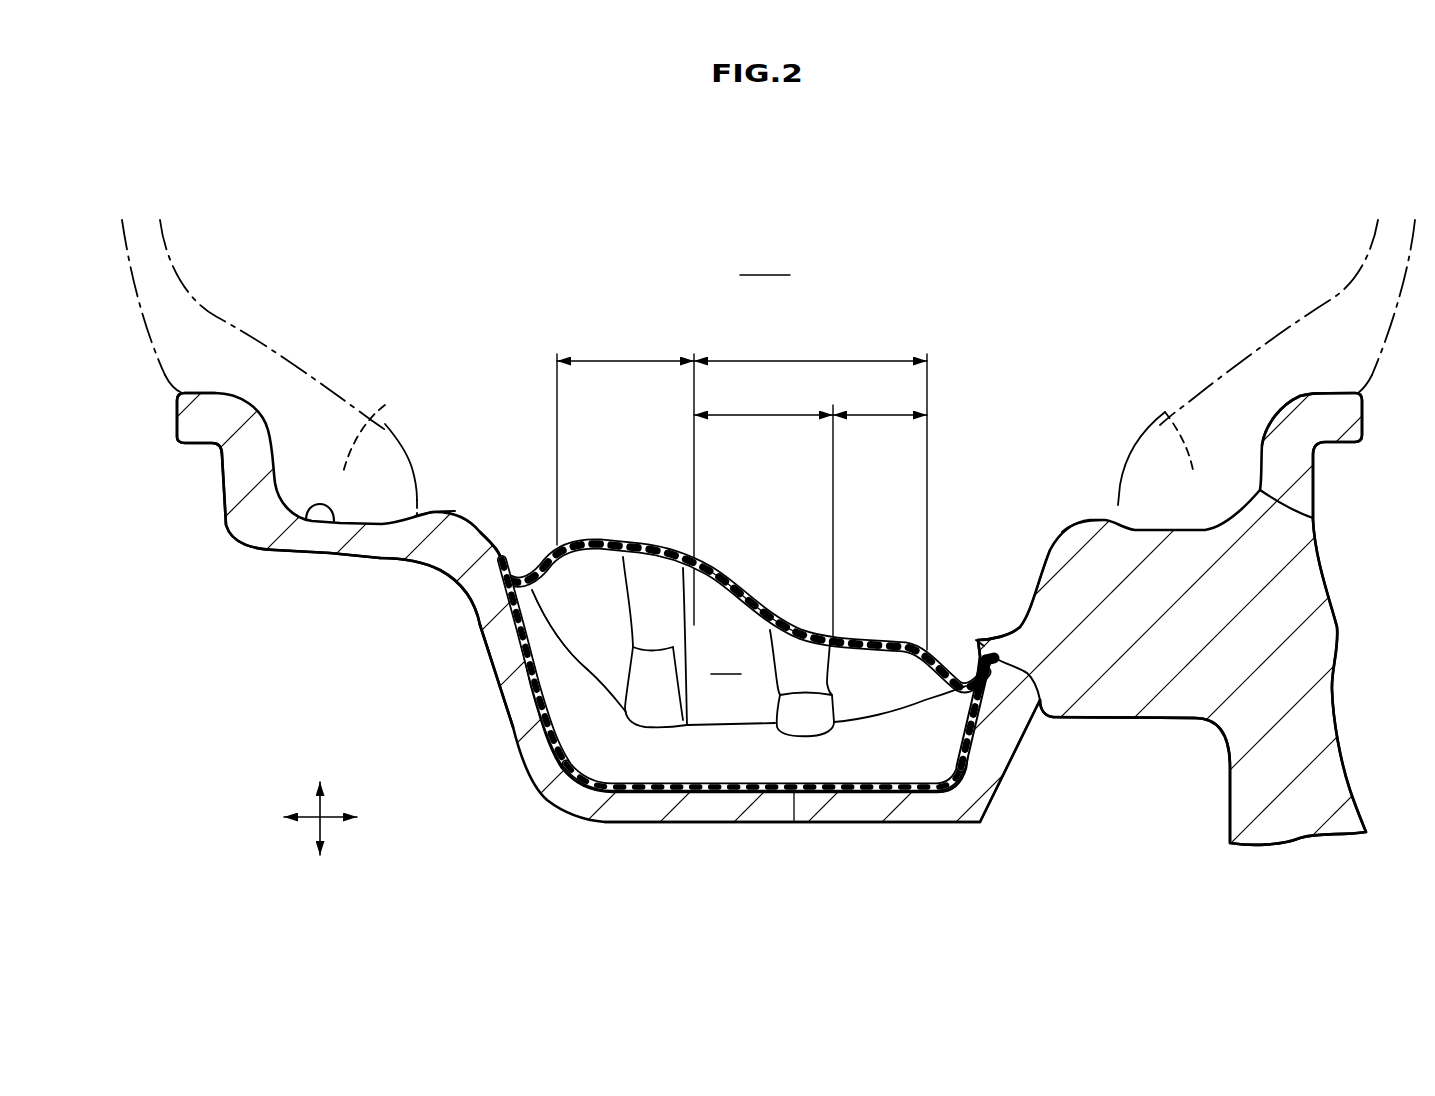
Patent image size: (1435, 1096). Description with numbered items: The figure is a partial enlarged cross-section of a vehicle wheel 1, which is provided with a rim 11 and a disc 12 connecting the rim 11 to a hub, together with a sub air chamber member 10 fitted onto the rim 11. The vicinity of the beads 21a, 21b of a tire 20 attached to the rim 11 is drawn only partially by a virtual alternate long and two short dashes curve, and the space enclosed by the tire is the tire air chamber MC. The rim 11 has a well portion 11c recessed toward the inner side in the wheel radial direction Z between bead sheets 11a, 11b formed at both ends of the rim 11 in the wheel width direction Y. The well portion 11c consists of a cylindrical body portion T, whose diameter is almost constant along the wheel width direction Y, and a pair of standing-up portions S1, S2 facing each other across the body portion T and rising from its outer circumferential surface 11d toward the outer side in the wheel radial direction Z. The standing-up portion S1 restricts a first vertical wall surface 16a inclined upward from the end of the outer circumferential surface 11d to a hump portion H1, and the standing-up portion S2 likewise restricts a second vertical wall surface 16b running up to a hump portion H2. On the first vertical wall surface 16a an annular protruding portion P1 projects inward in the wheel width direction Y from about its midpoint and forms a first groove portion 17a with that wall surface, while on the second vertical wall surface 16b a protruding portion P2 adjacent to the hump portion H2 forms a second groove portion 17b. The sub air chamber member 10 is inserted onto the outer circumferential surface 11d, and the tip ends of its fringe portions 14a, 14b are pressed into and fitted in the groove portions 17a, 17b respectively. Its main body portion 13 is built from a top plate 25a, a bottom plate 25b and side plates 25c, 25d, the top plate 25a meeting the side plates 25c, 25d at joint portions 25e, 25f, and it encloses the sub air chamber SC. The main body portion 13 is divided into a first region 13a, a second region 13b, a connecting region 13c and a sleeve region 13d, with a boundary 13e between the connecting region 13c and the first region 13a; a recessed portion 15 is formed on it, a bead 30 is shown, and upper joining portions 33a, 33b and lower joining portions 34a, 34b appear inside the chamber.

The vehicle wheel 1 is at (1362, 474).
The sub air chamber member 10 is at (748, 591).
The rim 11 is at (222, 486).
The bead sheet 11a is at (1313, 518).
The bead sheet 11b is at (309, 526).
The well portion 11c is at (793, 576).
The outer circumferential surface 11d is at (879, 784).
The disc 12 is at (1330, 780).
The main body portion 13 is at (748, 581).
The first region 13a is at (625, 360).
The second region 13b is at (817, 360).
The connecting region 13c is at (765, 414).
The sleeve region 13d is at (875, 414).
The boundary 13e is at (718, 558).
The fringe portion 14a is at (1050, 717).
The fringe portion 14b is at (462, 580).
The recessed portion 15 is at (858, 584).
The first vertical wall surface 16a is at (968, 742).
The second vertical wall surface 16b is at (538, 690).
The first groove portion 17a is at (973, 652).
The second groove portion 17b is at (512, 575).
The tire 20 is at (216, 305).
The bead 21a is at (1158, 418).
The bead 21b is at (385, 408).
The top plate 25a is at (594, 550).
The bottom plate 25b is at (728, 788).
The side plate 25c is at (990, 772).
The side plate 25d is at (540, 708).
The joint portion 25e is at (1000, 690).
The joint portion 25f is at (540, 596).
The bead 30 is at (592, 736).
The upper joining portion 33a is at (686, 598).
The upper joining portion 33b is at (831, 655).
The lower joining portion 34a is at (630, 690).
The lower joining portion 34b is at (767, 713).
The tire air chamber MC is at (765, 260).
The sub air chamber SC is at (725, 659).
The body portion T is at (794, 812).
The hump portion H1 is at (1080, 520).
The hump portion H2 is at (432, 518).
The protruding portion P1 is at (979, 640).
The protruding portion P2 is at (498, 544).
The standing-up portion S1 is at (1037, 640).
The standing-up portion S2 is at (497, 648).
The wheel radial direction Z is at (319, 803).
The wheel width direction Y is at (333, 822).